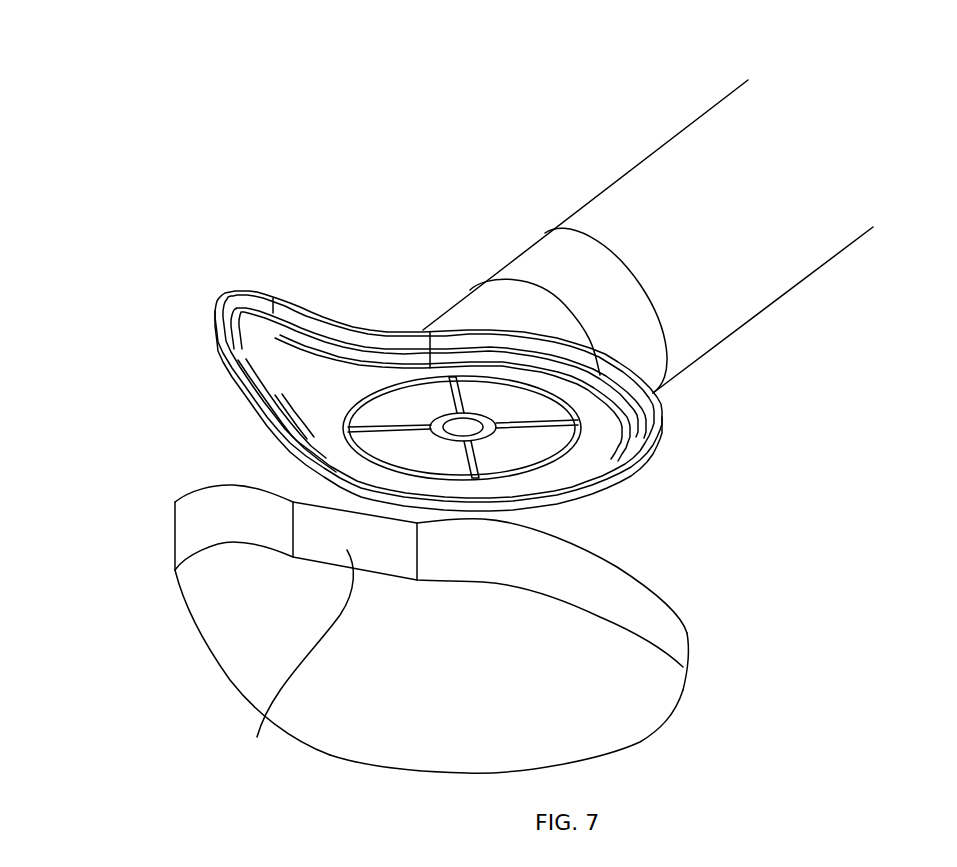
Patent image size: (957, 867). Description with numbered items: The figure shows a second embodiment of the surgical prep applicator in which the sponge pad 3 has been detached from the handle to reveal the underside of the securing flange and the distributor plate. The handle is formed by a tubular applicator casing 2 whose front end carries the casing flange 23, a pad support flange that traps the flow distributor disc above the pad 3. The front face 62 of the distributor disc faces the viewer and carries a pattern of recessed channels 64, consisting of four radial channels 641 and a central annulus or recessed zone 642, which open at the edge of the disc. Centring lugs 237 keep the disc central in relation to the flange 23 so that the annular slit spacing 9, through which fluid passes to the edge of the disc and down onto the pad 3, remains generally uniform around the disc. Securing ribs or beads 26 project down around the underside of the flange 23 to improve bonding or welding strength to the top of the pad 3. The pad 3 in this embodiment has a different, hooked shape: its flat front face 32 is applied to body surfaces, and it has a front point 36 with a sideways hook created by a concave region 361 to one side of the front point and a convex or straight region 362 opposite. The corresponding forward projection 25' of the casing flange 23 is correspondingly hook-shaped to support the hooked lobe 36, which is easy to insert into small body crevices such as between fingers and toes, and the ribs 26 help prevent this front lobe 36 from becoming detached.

The tubular applicator casing 2 is at (773, 273).
The casing flange 23 is at (400, 322).
The forward projection of the casing flange 25' is at (240, 286).
The securing ribs or beads 26 is at (238, 362).
The lugs 237 is at (350, 438).
The recessed channels 64 is at (548, 437).
The annular slit spacing 9 is at (537, 472).
The front face of the distributor disc 62 is at (552, 452).
The radial channels 641 is at (440, 400).
The central annulus or recessed zone 642 is at (430, 423).
The front point 36 is at (173, 532).
The sponge pad 3 is at (693, 638).
The flat front face 32 is at (647, 708).
The convex or straight region 362 is at (217, 670).
The concave region 361 is at (295, 656).